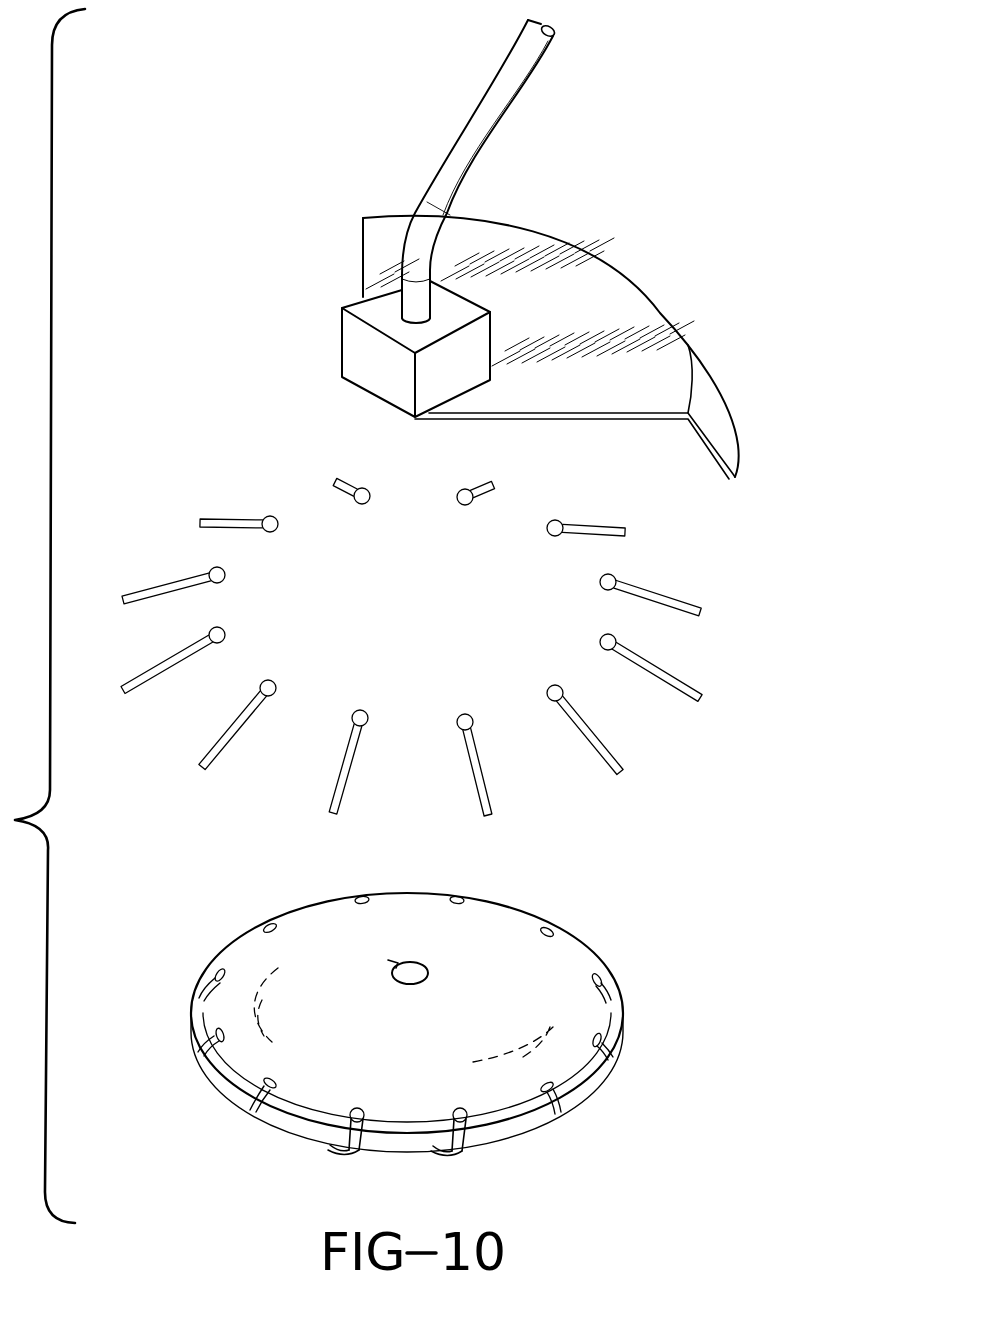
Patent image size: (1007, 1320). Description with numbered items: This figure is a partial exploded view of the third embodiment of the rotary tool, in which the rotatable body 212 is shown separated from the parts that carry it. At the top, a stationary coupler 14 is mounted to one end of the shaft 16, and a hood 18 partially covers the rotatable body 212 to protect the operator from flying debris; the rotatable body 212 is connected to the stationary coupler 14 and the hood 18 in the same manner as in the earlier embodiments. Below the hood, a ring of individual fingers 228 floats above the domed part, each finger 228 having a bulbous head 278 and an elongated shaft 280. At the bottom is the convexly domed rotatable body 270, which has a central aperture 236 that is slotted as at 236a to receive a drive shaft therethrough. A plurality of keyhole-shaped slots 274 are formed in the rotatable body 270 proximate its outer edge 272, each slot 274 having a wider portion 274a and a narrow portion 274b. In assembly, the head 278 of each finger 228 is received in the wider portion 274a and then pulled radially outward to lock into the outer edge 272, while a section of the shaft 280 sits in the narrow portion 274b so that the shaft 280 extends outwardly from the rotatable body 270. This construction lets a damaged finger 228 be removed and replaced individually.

The stationary coupler 14 is at (375, 385).
The shaft 16 is at (483, 97).
The hood 18 is at (608, 268).
The rotatable body 212 is at (245, 475).
The fingers 228 is at (449, 645).
The bulbous head 278 is at (272, 683).
The elongated shaft 280 is at (336, 790).
The convexly domed rotatable body 270 is at (463, 1033).
The outer edge 272 is at (490, 1150).
The keyhole-shaped slots 274 is at (563, 930).
The wider portion 274a is at (352, 1110).
The narrow portion 274b is at (340, 1142).
The central aperture 236 is at (425, 965).
The slot 236a is at (393, 963).